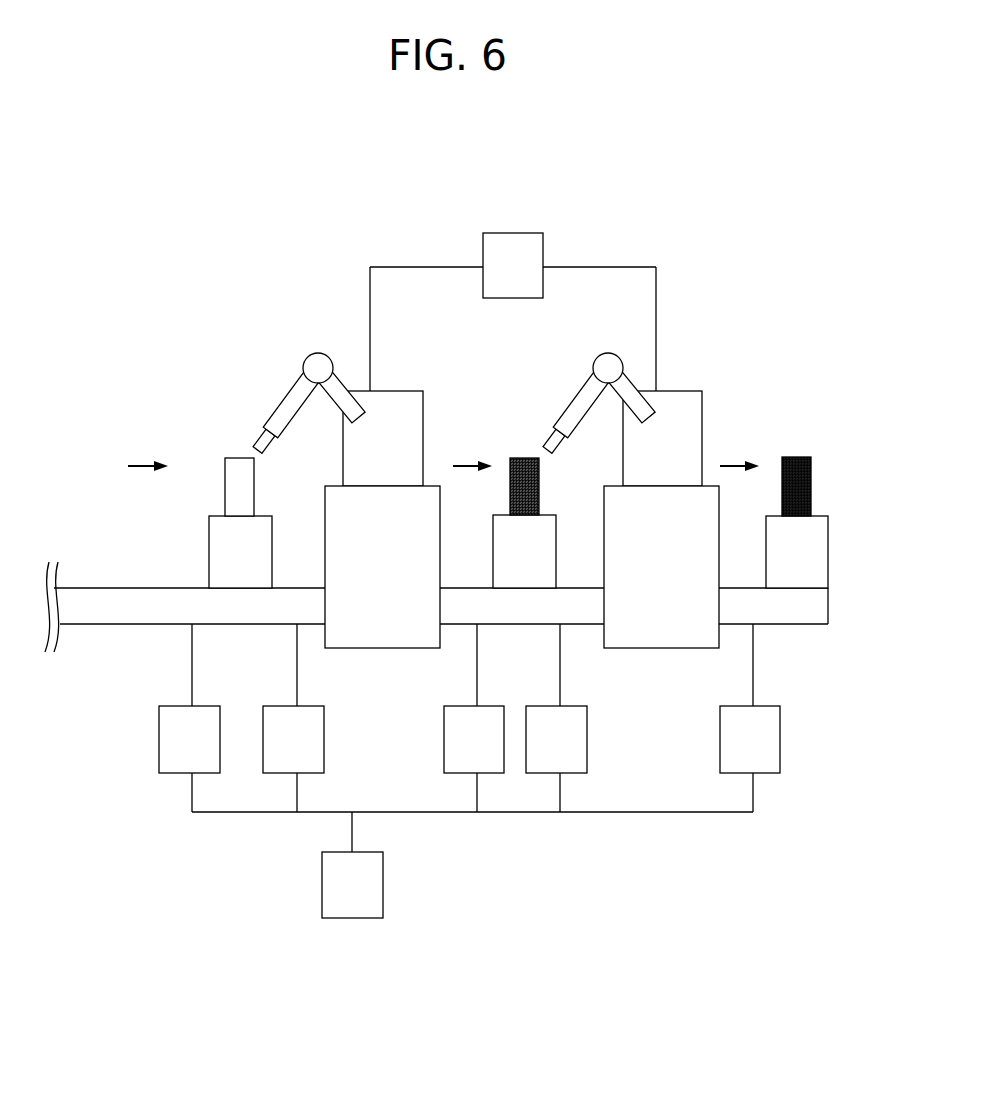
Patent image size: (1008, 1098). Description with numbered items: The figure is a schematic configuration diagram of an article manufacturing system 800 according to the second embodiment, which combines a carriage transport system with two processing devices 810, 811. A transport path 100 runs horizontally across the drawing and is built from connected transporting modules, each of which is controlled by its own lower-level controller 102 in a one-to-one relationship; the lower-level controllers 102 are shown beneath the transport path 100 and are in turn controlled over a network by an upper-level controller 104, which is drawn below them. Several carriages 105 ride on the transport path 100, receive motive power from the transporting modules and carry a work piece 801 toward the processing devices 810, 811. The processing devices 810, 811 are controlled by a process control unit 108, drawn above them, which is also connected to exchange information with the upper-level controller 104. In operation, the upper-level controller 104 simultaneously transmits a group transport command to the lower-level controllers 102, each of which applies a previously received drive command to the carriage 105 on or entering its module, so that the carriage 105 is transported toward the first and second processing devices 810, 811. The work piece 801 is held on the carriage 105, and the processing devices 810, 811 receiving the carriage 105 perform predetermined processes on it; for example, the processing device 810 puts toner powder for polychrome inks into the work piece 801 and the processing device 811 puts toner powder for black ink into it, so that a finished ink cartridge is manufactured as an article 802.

The article manufacturing system 800 is at (203, 194).
The transport path 100 is at (116, 611).
The lower-level controller 102 is at (165, 748).
The upper-level controller 104 is at (328, 880).
The carriage 105 is at (253, 522).
The process control unit 108 is at (509, 247).
The work piece 801 is at (235, 463).
The article 802 is at (795, 462).
The processing device 810 is at (408, 402).
The processing device 811 is at (688, 402).